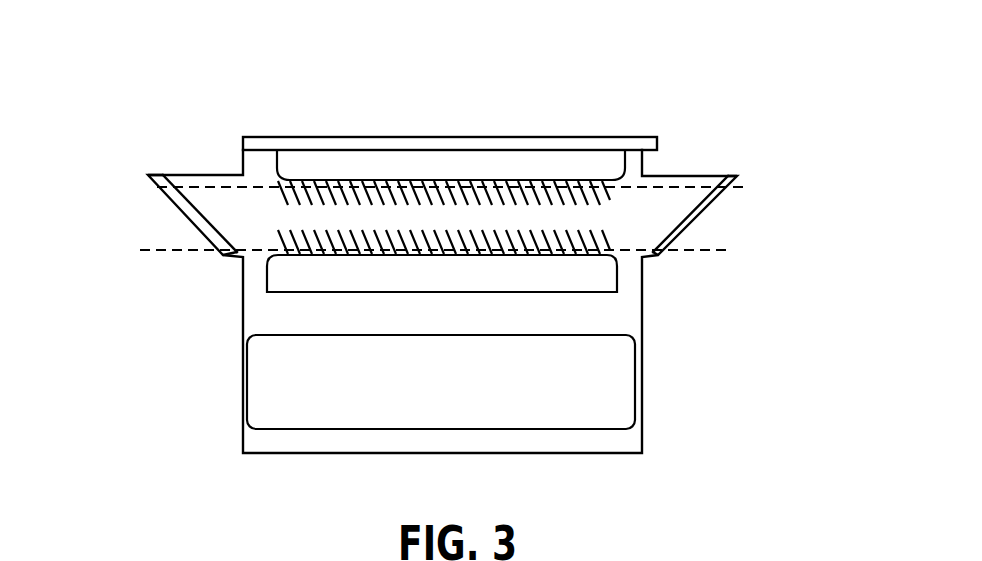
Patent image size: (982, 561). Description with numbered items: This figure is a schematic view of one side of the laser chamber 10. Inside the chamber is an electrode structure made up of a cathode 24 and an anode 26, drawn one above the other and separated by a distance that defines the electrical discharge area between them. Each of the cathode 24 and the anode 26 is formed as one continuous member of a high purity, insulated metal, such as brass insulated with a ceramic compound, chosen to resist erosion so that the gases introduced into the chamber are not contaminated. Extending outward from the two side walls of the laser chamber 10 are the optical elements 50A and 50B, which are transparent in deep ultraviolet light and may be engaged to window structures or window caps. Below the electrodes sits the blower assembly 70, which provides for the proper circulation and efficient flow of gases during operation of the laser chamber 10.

The laser chamber 10 is at (702, 108).
The cathode 24 is at (500, 162).
The anode 26 is at (490, 292).
The optical element 50A is at (192, 218).
The optical element 50B is at (706, 229).
The blower assembly 70 is at (622, 407).